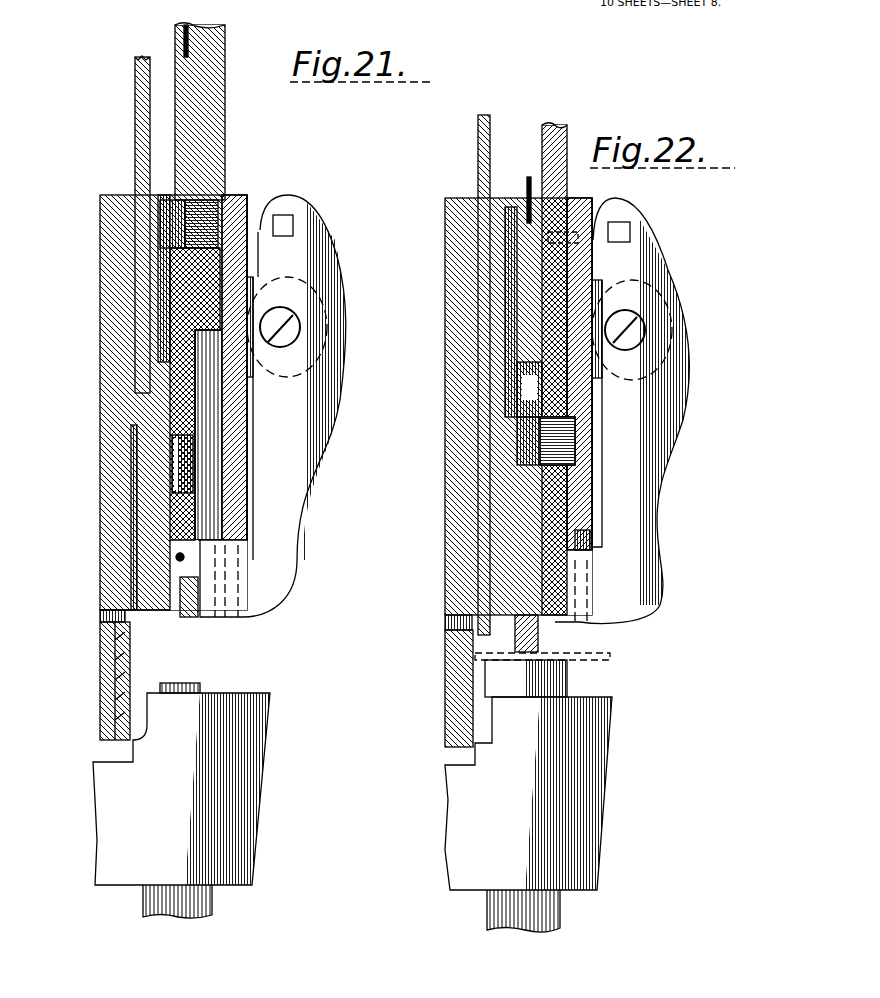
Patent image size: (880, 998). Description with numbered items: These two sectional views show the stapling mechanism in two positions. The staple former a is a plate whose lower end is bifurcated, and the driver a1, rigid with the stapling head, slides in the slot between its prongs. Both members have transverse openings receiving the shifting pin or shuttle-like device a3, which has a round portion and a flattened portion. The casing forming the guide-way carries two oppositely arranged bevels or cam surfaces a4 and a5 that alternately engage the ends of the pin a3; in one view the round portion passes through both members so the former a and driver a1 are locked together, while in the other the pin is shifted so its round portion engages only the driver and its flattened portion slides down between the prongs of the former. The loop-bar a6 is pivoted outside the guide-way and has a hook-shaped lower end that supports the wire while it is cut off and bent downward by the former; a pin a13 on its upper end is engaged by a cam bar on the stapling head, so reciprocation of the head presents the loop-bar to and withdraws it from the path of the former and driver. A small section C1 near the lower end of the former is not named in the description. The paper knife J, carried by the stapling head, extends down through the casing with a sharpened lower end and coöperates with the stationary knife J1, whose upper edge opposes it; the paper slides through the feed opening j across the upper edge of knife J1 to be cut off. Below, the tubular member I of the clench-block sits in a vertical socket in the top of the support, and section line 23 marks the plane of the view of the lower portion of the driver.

In FIG. 21, the section line 23 is at (205, 17).
In FIG. 21, the staple driver a1 is at (217, 125).
In FIG. 22, the staple driver a1 is at (557, 148).
In FIG. 21, the shifting pin a3 is at (197, 220).
In FIG. 22, the shifting pin a3 is at (550, 442).
In FIG. 21, the cam surface a4 is at (160, 362).
In FIG. 22, the cam surface a4 is at (508, 373).
In FIG. 21, the cam surface a5 is at (250, 220).
In FIG. 22, the cam surface a5 is at (572, 280).
In FIG. 21, the loop-bar a6 is at (293, 518).
In FIG. 22, the loop-bar a6 is at (637, 553).
In FIG. 21, the pin a13 is at (283, 228).
In FIG. 22, the pin a13 is at (620, 232).
In FIG. 21, the staple former a is at (190, 470).
In FIG. 21, the stop pin C1 is at (176, 558).
In FIG. 21, the knife J is at (140, 388).
In FIG. 22, the knife J is at (478, 158).
In FIG. 21, the coöperating knife J1 is at (120, 655).
In FIG. 22, the coöperating knife J1 is at (470, 660).
In FIG. 21, the feed opening j is at (112, 615).
In FIG. 22, the feed opening j is at (445, 622).
In FIG. 22, the tubular member I is at (555, 680).